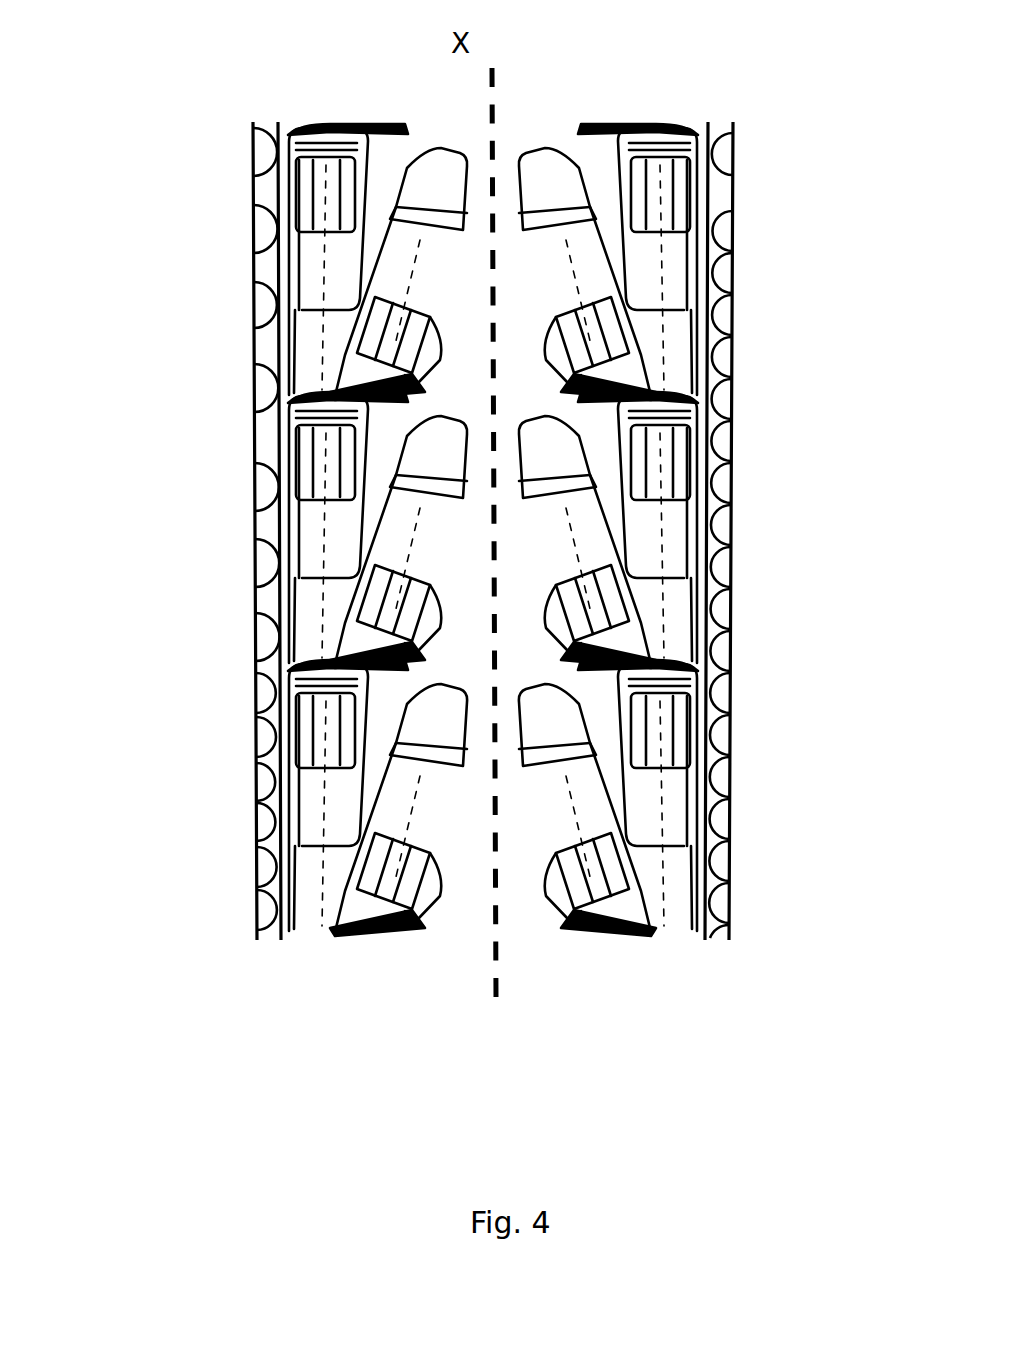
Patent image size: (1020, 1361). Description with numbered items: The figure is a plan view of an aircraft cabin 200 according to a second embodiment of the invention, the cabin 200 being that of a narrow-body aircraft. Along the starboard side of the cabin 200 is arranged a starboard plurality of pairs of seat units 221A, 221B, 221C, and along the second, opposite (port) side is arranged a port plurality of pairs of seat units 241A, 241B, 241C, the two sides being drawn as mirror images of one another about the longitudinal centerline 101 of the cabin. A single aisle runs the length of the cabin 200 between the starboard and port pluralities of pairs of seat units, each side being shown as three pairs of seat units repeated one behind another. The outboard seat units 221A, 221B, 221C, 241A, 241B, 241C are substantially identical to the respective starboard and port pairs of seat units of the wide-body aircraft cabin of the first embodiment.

The longitudinal axis / centerline of the glove 101 is at (500, 143).
The aircraft cabin 200 is at (212, 127).
The pair of seat units 221C is at (218, 253).
The pair of seat units 221B is at (209, 535).
The pair of seat units 221A is at (227, 782).
The pair of seat units 241C is at (748, 277).
The pair of seat units 241B is at (757, 524).
The pair of seat units 241A is at (760, 758).